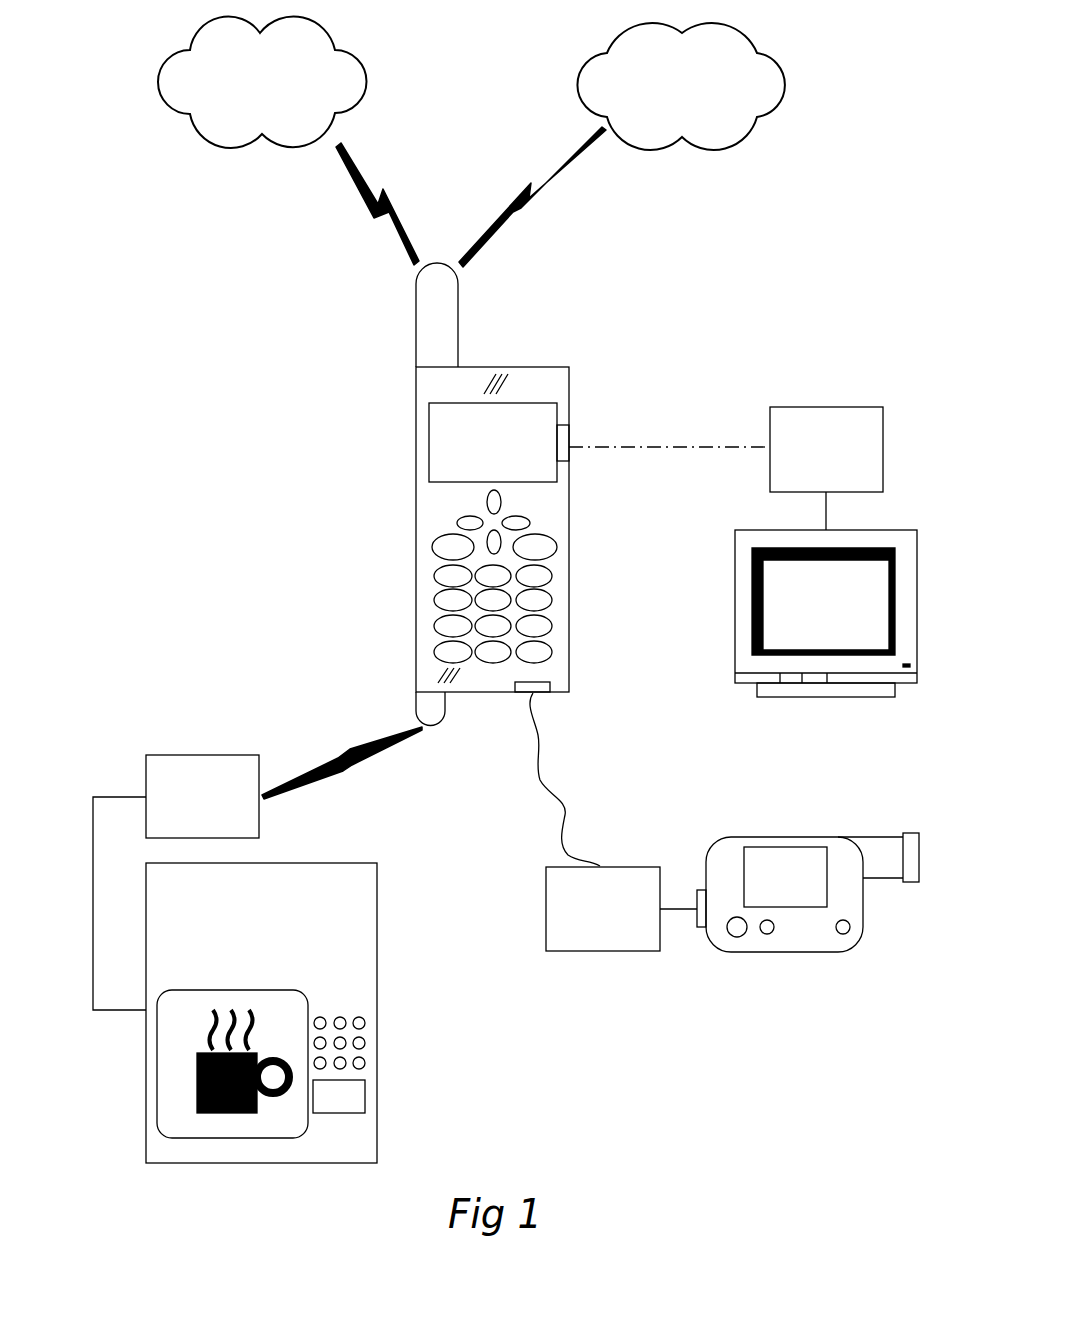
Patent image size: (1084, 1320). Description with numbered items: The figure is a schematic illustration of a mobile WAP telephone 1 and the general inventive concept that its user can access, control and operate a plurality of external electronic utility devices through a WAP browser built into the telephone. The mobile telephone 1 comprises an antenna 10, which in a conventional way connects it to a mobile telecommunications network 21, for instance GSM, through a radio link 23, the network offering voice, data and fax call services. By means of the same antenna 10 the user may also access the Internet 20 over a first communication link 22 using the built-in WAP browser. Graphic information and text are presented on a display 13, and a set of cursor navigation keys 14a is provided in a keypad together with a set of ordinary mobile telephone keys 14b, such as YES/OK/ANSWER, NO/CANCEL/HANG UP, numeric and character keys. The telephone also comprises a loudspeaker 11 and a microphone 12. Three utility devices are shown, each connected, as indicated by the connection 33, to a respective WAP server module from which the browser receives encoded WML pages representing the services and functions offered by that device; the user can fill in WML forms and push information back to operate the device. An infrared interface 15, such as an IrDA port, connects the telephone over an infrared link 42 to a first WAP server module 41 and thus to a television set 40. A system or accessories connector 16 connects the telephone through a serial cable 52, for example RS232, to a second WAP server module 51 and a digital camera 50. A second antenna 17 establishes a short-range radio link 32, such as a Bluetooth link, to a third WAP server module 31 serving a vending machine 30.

The mobile telephone 1 is at (524, 330).
The antenna 10 is at (432, 322).
The loudspeaker 11 is at (485, 387).
The microphone 12 is at (437, 677).
The display 13 is at (443, 437).
The cursor navigation keys 14a is at (490, 508).
The mobile telephone keys 14b is at (450, 575).
The infrared interface 15 is at (571, 434).
The system or accessories connector 16 is at (552, 690).
The second antenna 17 is at (428, 708).
The Internet 20 is at (262, 82).
The mobile telecommunications network 21 is at (680, 86).
The first communication link 22 is at (368, 210).
The radio link 23 is at (543, 206).
The vending machine 30 is at (377, 1137).
The third WAP server module 31 is at (160, 772).
The short-range radio link 32 is at (336, 753).
The connection 33 is at (92, 840).
The television set 40 is at (758, 535).
The first WAP server module 41 is at (788, 418).
The infrared link 42 is at (662, 450).
The digital camera 50 is at (731, 845).
The second WAP server module 51 is at (558, 885).
The serial cable 52 is at (533, 776).